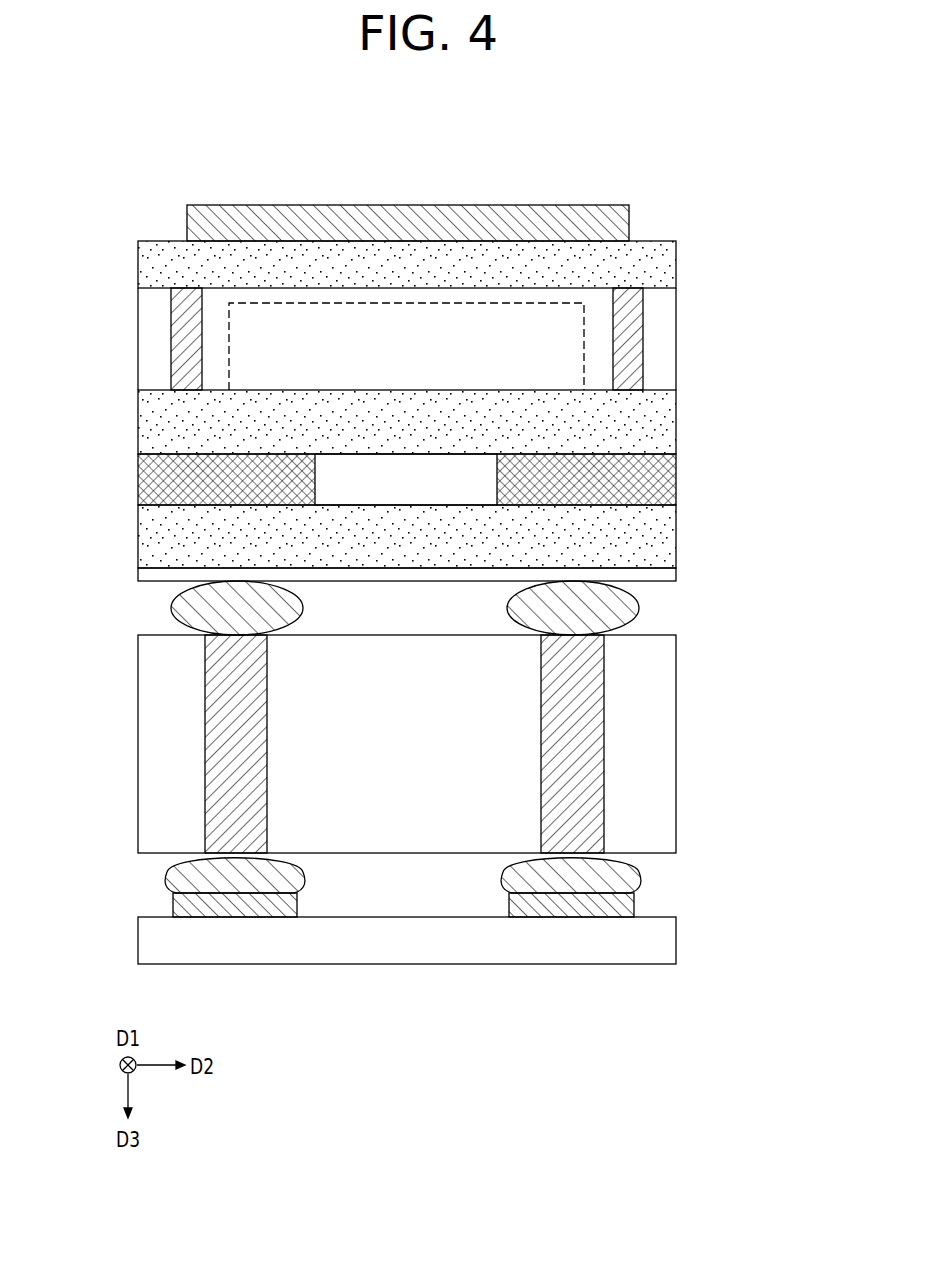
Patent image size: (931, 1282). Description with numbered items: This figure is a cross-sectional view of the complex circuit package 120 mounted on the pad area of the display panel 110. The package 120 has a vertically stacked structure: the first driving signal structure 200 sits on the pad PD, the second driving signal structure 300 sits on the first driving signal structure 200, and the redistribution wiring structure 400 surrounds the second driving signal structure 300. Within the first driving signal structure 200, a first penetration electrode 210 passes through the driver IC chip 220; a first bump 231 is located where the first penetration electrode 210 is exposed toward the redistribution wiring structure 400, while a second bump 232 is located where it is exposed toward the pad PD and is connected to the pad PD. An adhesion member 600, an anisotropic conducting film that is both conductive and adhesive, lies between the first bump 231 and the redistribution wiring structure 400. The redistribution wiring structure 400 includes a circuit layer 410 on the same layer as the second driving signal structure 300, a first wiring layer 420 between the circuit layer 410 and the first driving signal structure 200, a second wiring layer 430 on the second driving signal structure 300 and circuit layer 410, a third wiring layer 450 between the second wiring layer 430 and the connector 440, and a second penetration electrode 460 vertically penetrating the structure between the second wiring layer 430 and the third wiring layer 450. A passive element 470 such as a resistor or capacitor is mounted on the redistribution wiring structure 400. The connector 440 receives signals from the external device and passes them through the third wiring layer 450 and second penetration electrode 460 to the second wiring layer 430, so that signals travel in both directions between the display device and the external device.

The complex circuit package 120 is at (120, 190).
The redistribution wiring structure 400 is at (762, 209).
The connector 440 is at (629, 215).
The third wiring layer 450 is at (668, 267).
The passive element 470 is at (230, 342).
The second penetration electrode 460 is at (642, 352).
The second wiring layer 430 is at (670, 420).
The circuit layer 410 is at (670, 478).
The second driving signal structure 300 is at (322, 477).
The first wiring layer 420 is at (670, 530).
The adhesion member 600 is at (163, 582).
The first driving signal structure 200 is at (761, 602).
The first bump 231 is at (628, 612).
The driver IC chip 220 is at (667, 695).
The first penetration electrode 210 is at (604, 752).
The second bump 232 is at (628, 873).
The pad PD is at (635, 903).
The display panel 110 is at (667, 945).